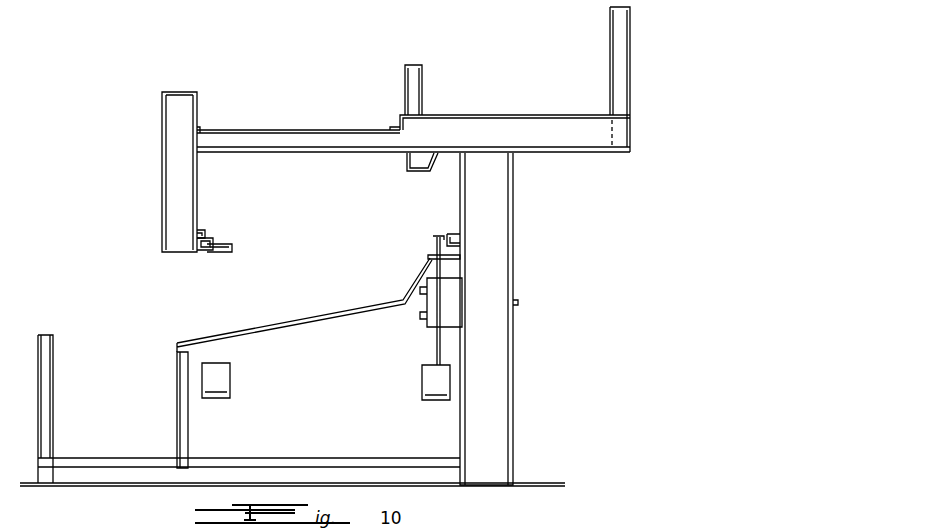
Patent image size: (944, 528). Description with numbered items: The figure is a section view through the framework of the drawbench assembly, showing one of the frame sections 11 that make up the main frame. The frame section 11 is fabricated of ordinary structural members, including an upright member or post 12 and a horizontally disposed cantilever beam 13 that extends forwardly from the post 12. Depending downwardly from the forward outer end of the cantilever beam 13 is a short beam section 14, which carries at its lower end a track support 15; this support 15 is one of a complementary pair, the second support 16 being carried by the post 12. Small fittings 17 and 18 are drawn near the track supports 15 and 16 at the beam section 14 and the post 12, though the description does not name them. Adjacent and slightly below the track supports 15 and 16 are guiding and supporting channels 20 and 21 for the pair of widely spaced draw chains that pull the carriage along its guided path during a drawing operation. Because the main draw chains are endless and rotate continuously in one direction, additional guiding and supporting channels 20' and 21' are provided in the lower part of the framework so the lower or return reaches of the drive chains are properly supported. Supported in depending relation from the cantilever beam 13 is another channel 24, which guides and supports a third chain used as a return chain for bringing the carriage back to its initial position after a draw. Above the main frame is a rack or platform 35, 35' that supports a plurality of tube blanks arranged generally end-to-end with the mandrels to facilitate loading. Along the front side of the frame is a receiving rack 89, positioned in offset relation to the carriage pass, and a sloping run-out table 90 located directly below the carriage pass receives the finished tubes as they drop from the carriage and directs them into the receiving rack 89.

The frame section 11 is at (342, 421).
The upright member 12 is at (498, 344).
The cantilever beam 13 is at (245, 136).
The short beam section 14 is at (185, 188).
The track support 15 is at (205, 242).
The second support 16 is at (455, 243).
The side bracket 17 is at (200, 231).
The upper bracket 18 is at (458, 233).
The guiding and supporting channel 20 is at (241, 256).
The guiding and supporting channel 20' is at (223, 395).
The guiding and supporting channel 21 is at (420, 300).
The guiding and supporting channel 21' is at (438, 396).
The channel 24 is at (410, 165).
The rack or platform 35 is at (515, 114).
The rack or platform 35' is at (350, 113).
The receiving rack 89 is at (72, 460).
The sloping run-out table 90 is at (228, 325).